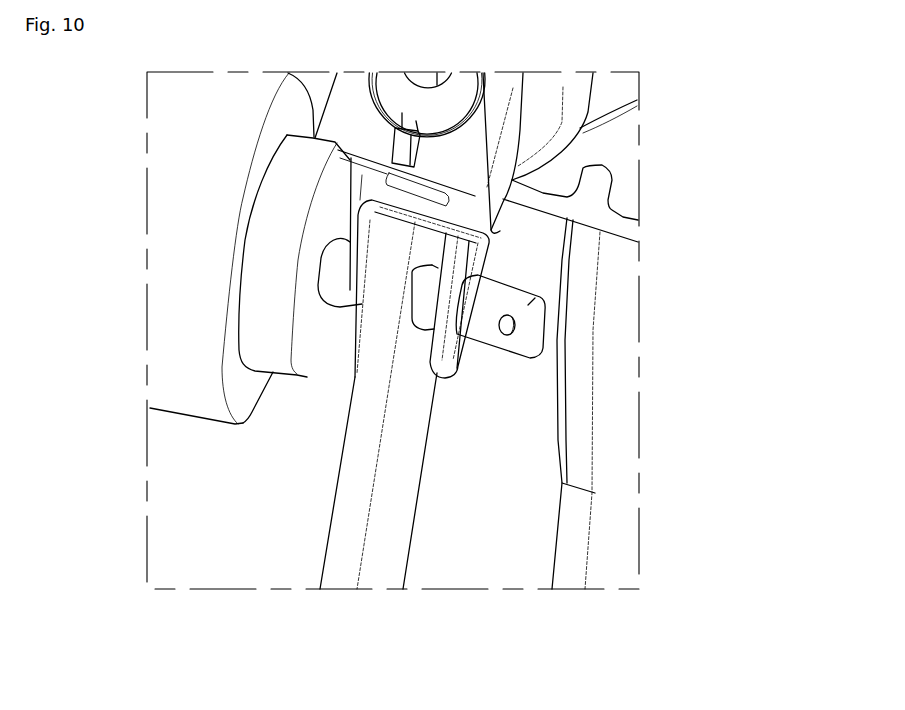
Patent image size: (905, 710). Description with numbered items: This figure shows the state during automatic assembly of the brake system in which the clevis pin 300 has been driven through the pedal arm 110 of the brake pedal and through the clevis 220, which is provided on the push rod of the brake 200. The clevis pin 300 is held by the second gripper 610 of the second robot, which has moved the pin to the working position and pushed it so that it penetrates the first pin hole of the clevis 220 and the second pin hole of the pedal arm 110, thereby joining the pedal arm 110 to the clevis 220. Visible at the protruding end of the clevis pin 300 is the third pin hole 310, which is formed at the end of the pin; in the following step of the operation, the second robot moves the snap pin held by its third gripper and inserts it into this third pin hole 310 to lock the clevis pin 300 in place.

The pedal arm 110 is at (352, 488).
The brake 200 is at (625, 458).
The clevis 220 is at (473, 262).
The clevis pin 300 is at (530, 328).
The third pin hole 310 is at (505, 334).
The second gripper 610 is at (178, 257).